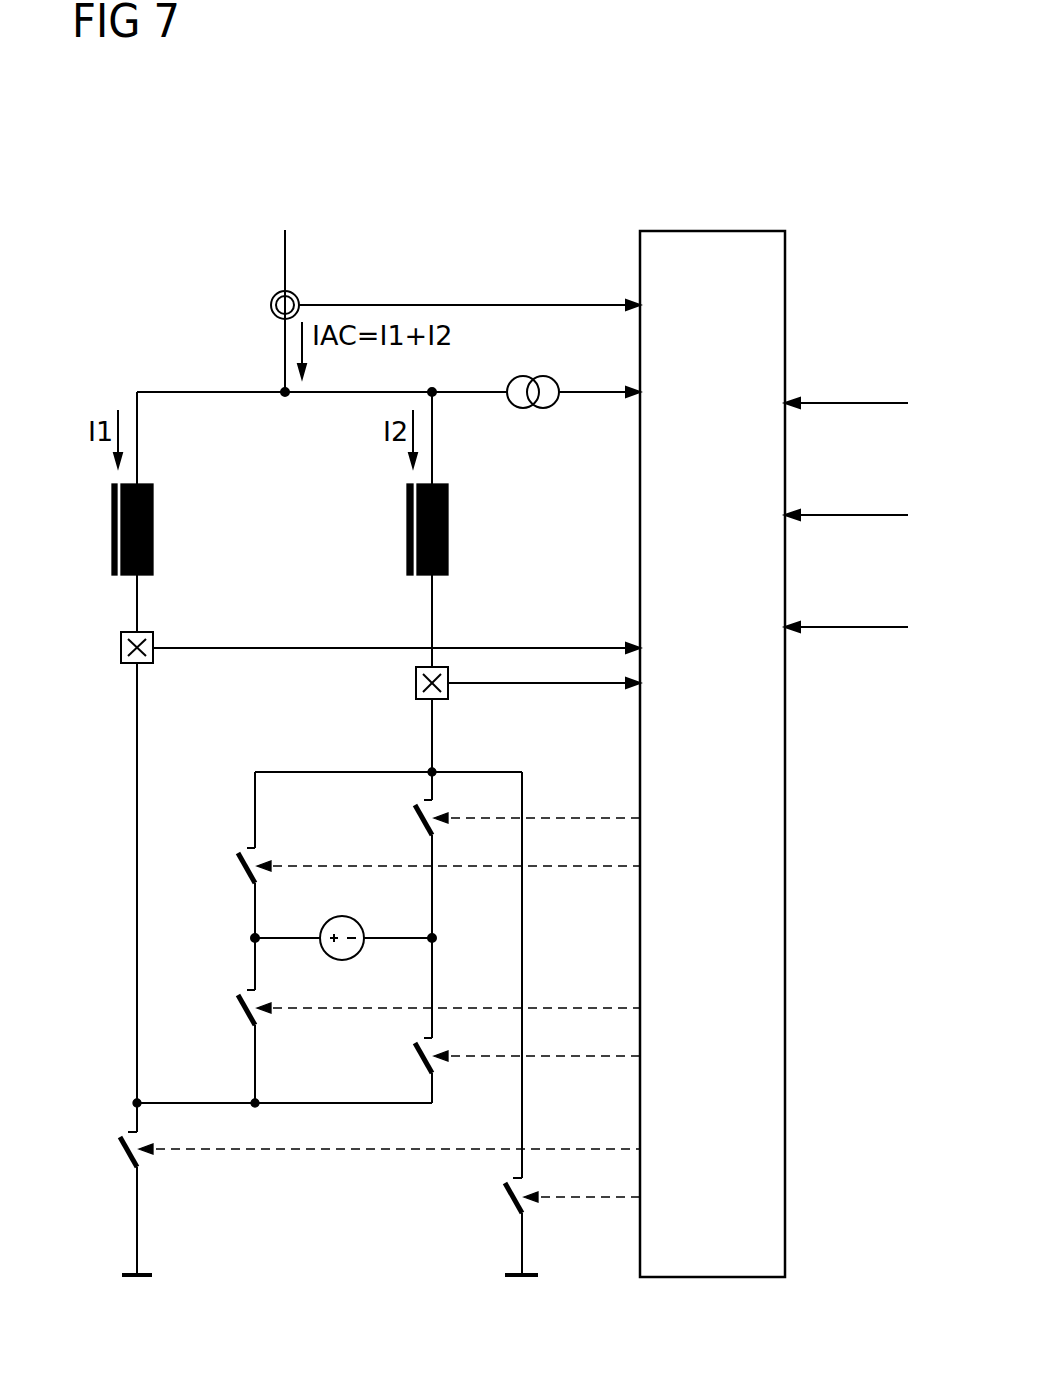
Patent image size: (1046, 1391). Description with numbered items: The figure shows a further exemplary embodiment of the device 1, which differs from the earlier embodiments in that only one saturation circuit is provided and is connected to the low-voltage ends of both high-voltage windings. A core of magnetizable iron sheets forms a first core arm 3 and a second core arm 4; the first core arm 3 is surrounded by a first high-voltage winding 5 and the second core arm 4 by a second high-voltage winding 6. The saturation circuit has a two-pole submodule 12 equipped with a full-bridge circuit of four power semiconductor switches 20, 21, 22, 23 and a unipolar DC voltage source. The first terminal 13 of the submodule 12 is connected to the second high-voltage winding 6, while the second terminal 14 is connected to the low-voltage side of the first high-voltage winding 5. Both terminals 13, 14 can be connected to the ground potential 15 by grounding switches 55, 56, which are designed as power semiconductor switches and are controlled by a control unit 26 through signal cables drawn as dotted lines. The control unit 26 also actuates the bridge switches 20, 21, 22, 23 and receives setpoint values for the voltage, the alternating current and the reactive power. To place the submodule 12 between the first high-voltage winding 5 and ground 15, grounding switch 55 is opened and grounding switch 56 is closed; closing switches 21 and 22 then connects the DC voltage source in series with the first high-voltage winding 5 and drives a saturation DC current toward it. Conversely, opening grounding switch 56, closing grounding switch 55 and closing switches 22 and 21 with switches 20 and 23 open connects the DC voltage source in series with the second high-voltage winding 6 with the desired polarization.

The device 1 is at (58, 326).
The first core arm 3 is at (112, 530).
The second core arm 4 is at (407, 530).
The first high-voltage winding 5 is at (153, 530).
The second high-voltage winding 6 is at (448, 530).
The submodule 12 is at (200, 960).
The first terminal 13 is at (430, 770).
The second terminal 14 is at (175, 1103).
The ground potential 15 is at (147, 1278).
The power semiconductor switch 20 is at (240, 866).
The power semiconductor switch 21 is at (240, 1007).
The power semiconductor switch 22 is at (419, 820).
The power semiconductor switch 23 is at (419, 1057).
The control unit 26 is at (713, 1278).
The grounding switch 55 is at (120, 1151).
The grounding switch 56 is at (505, 1195).